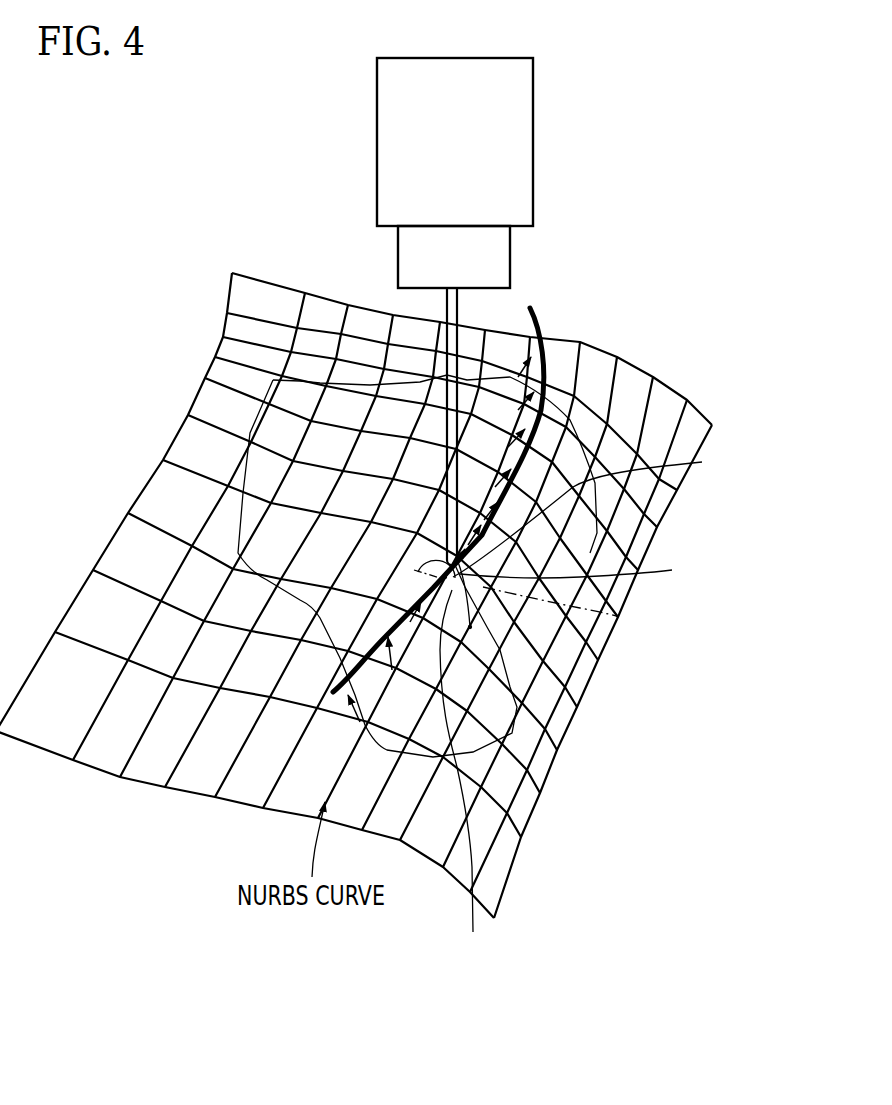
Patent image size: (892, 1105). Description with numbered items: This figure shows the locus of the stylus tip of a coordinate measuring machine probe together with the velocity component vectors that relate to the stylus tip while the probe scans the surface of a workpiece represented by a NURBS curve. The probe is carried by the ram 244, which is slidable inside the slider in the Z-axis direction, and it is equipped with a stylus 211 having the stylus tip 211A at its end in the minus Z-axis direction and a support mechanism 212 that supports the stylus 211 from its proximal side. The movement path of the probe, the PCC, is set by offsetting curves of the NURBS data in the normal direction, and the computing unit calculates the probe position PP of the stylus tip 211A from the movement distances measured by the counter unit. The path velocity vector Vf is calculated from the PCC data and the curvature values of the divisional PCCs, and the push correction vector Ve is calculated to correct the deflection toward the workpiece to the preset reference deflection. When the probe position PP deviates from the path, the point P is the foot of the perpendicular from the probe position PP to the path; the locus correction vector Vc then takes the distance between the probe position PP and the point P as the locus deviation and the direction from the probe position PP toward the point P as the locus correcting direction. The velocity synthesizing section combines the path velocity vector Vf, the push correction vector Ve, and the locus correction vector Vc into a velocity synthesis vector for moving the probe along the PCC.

The ram 244 is at (533, 100).
The support mechanism 212 is at (510, 258).
The stylus 211 is at (458, 330).
The stylus tip 211A is at (618, 617).
The element PCC is at (541, 317).
The point P is at (424, 571).
The probe position PP is at (470, 628).
The push correction vector Ve is at (722, 444).
The path velocity vector Vf is at (686, 549).
The locus correction vector Vc is at (471, 941).